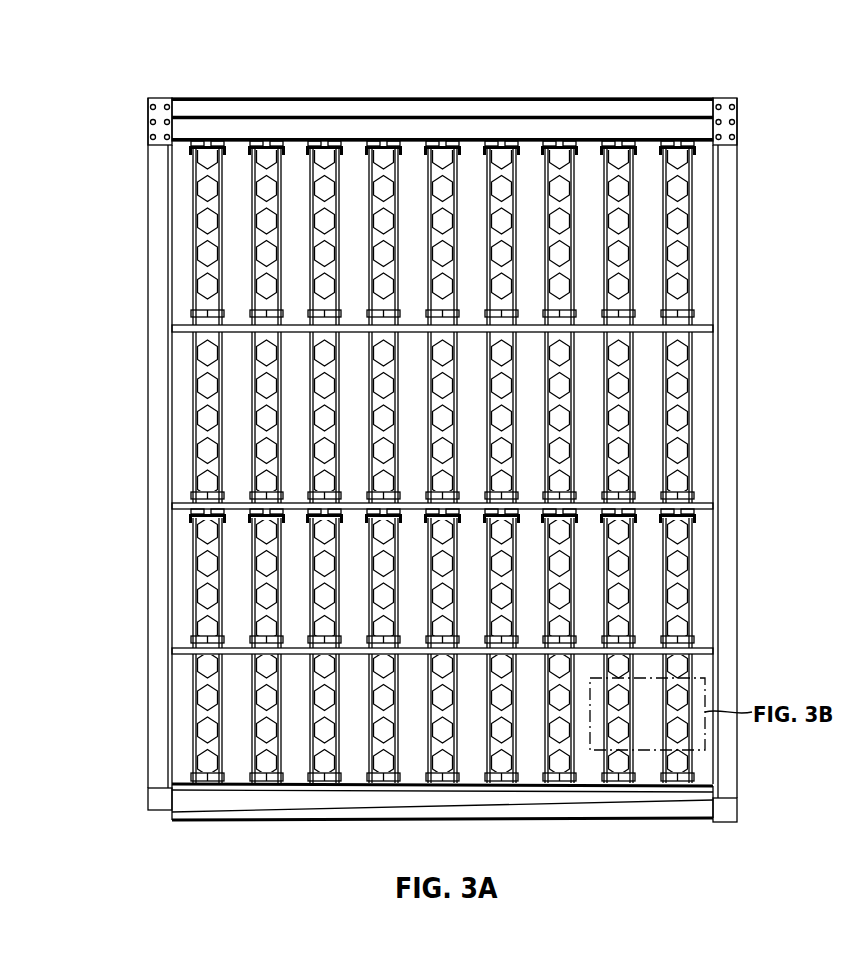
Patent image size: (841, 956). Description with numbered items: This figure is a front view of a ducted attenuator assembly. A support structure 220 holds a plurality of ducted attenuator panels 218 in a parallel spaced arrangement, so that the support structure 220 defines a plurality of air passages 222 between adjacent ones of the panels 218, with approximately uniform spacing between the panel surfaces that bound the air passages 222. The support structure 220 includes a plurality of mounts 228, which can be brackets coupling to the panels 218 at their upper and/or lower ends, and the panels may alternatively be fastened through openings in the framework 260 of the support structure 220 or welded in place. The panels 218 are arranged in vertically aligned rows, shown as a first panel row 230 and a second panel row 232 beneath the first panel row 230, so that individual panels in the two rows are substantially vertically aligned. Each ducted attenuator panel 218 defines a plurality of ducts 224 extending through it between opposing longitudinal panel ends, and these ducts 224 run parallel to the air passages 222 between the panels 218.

The support structure 220 is at (680, 114).
The air passages 222 is at (513, 415).
The ducted attenuator panels 218 is at (694, 201).
The ducts 224 is at (678, 175).
The mounts 228 is at (695, 323).
The first panel row 230 is at (166, 388).
The second panel row 232 is at (166, 622).
The framework 260 is at (722, 386).